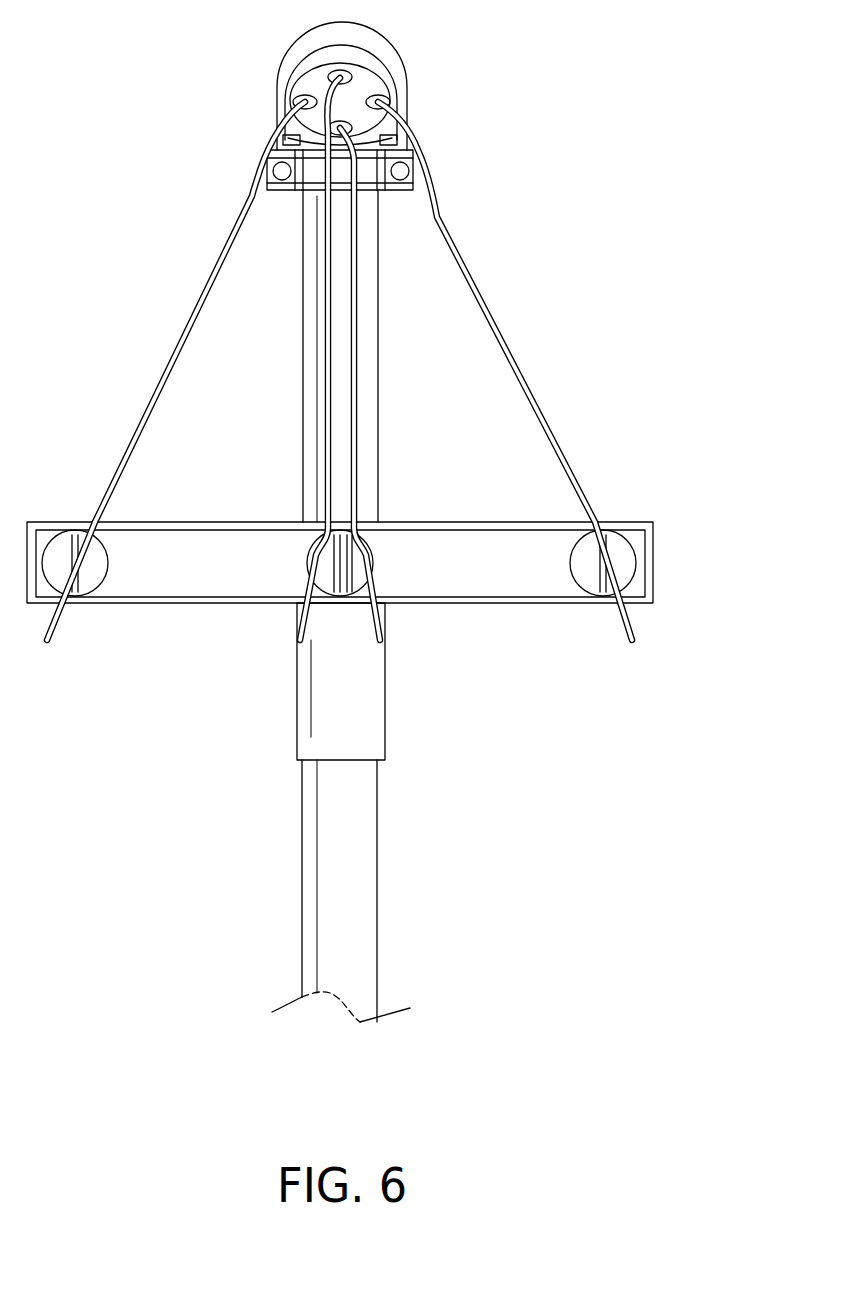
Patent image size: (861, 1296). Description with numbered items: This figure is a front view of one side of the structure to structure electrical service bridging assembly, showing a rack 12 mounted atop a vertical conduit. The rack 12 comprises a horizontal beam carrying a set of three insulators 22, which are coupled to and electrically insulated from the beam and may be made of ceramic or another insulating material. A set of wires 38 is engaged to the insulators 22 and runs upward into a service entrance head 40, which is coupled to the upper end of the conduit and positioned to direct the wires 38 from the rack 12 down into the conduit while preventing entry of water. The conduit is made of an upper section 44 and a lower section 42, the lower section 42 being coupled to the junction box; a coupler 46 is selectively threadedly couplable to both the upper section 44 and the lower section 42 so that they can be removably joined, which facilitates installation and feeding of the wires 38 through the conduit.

The service entrance head 40 is at (355, 37).
The set of wires 38 is at (465, 315).
The upper section 44 is at (393, 404).
The rack 12 is at (503, 532).
The insulators 22 is at (556, 564).
The coupler 46 is at (399, 697).
The lower section 42 is at (392, 912).